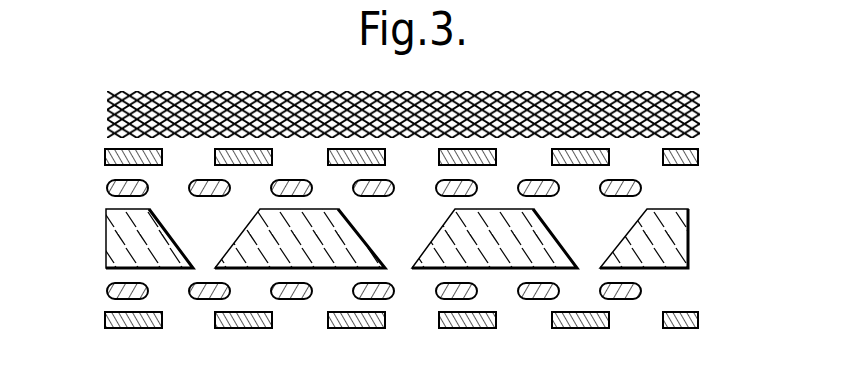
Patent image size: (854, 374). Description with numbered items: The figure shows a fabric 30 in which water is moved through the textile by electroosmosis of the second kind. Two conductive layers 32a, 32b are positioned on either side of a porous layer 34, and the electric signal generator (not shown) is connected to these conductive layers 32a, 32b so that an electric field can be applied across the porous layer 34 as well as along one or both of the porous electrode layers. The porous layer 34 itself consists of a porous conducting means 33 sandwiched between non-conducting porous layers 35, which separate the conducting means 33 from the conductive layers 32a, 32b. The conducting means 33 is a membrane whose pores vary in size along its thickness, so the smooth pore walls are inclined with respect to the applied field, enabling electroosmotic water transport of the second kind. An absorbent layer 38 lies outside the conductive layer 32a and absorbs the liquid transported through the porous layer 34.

The fabric 30 is at (205, 65).
The absorbent layer 38 is at (110, 118).
The conductive layer 32a is at (699, 157).
The conductive layer 32b is at (699, 316).
The porous layer 34 is at (720, 178).
The non-conducting porous layers 35 is at (108, 185).
The porous conducting means 33 is at (110, 240).